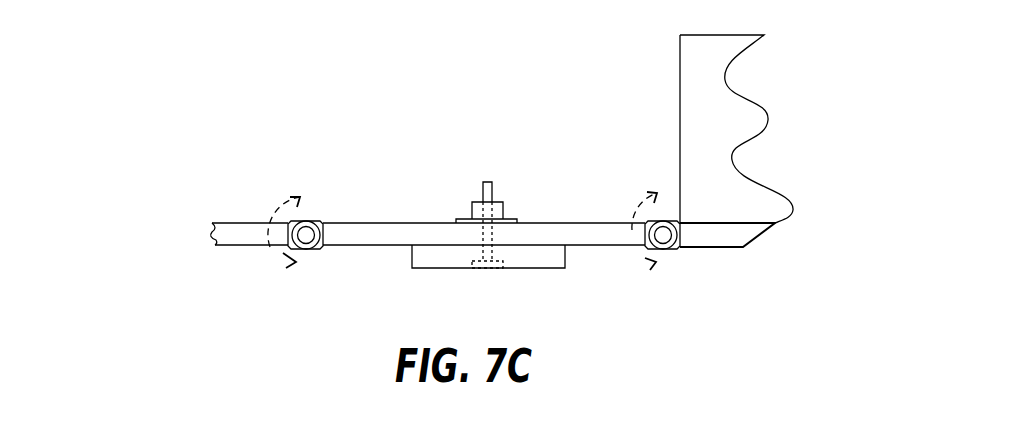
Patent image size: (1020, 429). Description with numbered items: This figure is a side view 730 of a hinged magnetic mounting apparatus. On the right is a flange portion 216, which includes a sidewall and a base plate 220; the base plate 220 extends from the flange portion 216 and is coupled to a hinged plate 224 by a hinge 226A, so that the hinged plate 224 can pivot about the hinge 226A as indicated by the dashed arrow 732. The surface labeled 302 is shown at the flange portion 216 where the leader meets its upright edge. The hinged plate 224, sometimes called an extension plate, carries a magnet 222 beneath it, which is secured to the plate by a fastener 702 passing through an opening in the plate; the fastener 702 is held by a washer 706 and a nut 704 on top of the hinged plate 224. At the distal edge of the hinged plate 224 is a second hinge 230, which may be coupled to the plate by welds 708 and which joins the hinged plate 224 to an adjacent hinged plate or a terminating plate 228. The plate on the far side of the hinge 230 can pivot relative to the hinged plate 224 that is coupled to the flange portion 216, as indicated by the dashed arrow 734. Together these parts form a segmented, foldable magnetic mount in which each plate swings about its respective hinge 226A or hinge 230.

The side view 730 is at (112, 48).
The hinged plate 224 is at (407, 223).
The terminating plate 228 is at (208, 223).
The hinge 230 is at (305, 220).
The weld 708 is at (320, 248).
The dashed arrow 734 is at (285, 253).
The magnet 222 is at (530, 268).
The fastener 702 is at (488, 185).
The nut 704 is at (473, 202).
The washer 706 is at (518, 222).
The hinge 226A is at (672, 250).
The dashed arrow 732 is at (650, 262).
The base plate 220 is at (730, 247).
The wall surface 302 is at (680, 92).
The flange portion 216 is at (785, 72).